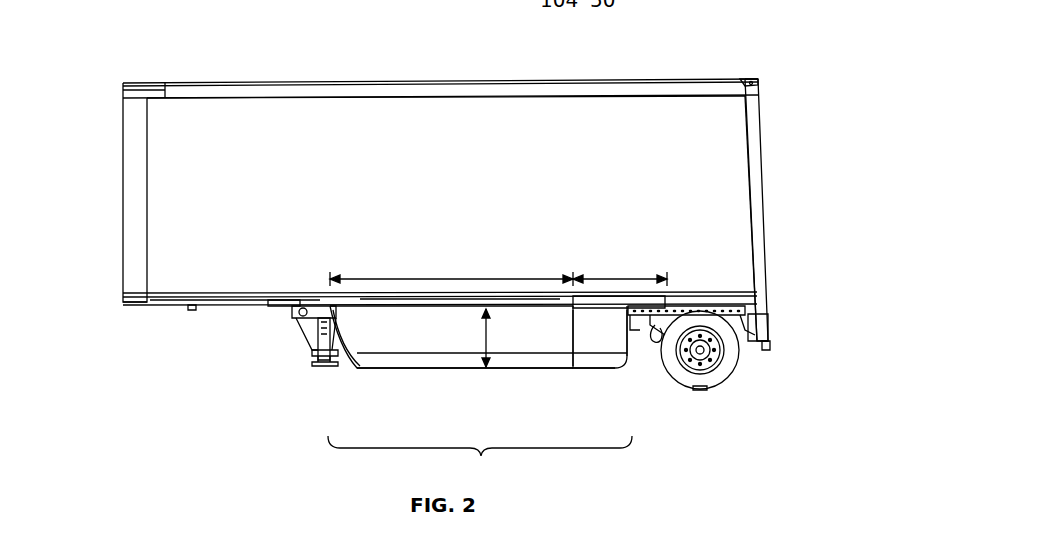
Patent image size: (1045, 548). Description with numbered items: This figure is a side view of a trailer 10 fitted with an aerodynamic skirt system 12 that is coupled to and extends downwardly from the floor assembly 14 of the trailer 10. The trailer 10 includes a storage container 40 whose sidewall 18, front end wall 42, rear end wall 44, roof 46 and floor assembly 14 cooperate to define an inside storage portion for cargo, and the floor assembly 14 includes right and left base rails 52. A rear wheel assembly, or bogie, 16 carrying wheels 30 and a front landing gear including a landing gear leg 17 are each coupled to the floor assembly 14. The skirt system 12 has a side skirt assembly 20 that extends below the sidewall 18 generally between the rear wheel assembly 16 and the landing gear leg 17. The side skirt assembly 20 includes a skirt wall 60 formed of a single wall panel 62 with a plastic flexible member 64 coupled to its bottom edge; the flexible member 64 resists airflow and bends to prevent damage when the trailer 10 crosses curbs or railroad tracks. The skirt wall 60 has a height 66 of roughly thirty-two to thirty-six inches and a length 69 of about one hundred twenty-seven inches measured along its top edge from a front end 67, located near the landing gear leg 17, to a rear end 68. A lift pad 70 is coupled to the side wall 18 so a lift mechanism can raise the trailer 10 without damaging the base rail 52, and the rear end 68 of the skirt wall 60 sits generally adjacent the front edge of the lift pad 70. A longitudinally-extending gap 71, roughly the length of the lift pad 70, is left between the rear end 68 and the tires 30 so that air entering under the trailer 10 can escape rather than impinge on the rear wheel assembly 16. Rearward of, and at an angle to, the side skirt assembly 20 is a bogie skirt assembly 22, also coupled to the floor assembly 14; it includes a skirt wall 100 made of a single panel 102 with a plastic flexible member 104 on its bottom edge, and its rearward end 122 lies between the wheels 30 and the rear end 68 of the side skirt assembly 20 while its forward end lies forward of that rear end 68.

The trailer 10 is at (134, 22).
The aerodynamic skirt system 12 is at (480, 459).
The floor assembly 14 is at (242, 306).
The rear wheel assembly 16 is at (740, 365).
The landing gear leg 17 is at (321, 367).
The sidewall 18 is at (176, 215).
The side skirt assembly 20 is at (478, 369).
The bogie skirt assembly 22 is at (633, 338).
The wheels 30 is at (714, 389).
The storage container 40 is at (733, 78).
The front end wall 42 is at (123, 146).
The rear end wall 44 is at (765, 180).
The roof 46 is at (350, 80).
The base rails 52 is at (281, 306).
The skirt wall 60 is at (318, 346).
The wall panel 62 is at (451, 337).
The flexible member 64 is at (416, 369).
The height 66 is at (489, 340).
The front end 67 is at (341, 346).
The rear end 68 is at (566, 336).
The length 69 is at (466, 278).
The lift pad 70 is at (600, 301).
The gap 71 is at (641, 278).
The skirt wall 100 is at (640, 347).
The panel 102 is at (600, 337).
The flexible member 104 is at (597, 360).
The rearward end 122 is at (655, 316).